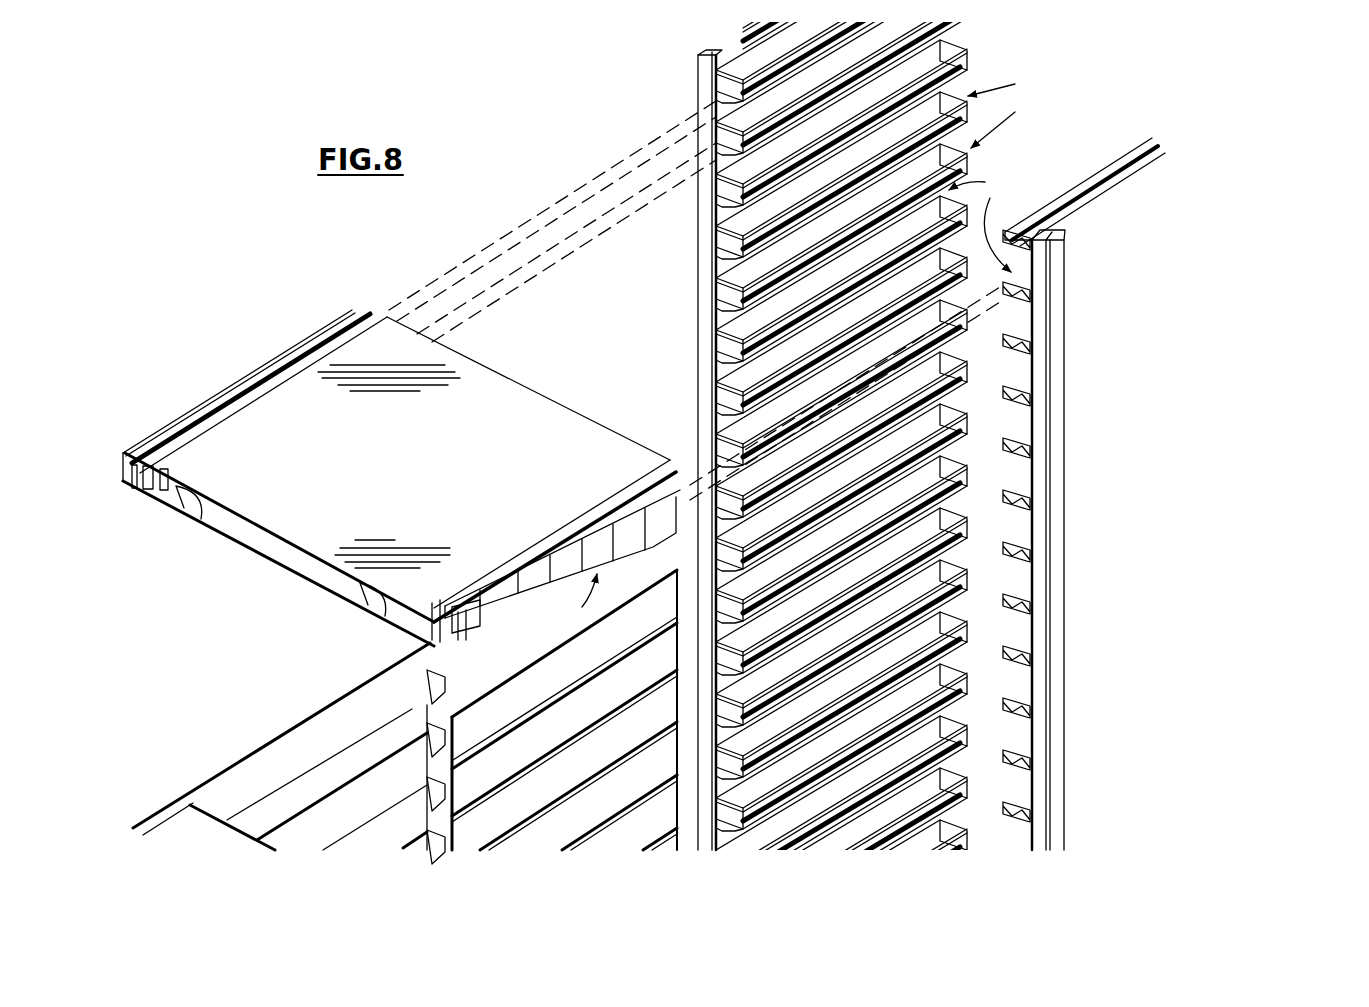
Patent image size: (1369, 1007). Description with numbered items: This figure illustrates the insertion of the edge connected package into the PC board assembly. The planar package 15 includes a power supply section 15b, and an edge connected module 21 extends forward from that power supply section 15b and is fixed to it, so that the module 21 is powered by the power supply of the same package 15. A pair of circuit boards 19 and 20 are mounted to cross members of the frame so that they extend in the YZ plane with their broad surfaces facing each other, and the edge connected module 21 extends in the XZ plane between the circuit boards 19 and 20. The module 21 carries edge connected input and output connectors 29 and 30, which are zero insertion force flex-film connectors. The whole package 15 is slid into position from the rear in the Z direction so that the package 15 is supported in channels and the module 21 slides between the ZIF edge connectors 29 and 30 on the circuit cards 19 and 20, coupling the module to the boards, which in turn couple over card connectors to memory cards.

The planar package 15 is at (239, 714).
The power supply section 15b is at (412, 678).
The circuit board 19 is at (1166, 279).
The circuit board 20 is at (697, 266).
The edge connected module 21 is at (512, 393).
The ZIF edge connector 29 is at (627, 546).
The ZIF edge connector 30 is at (332, 324).